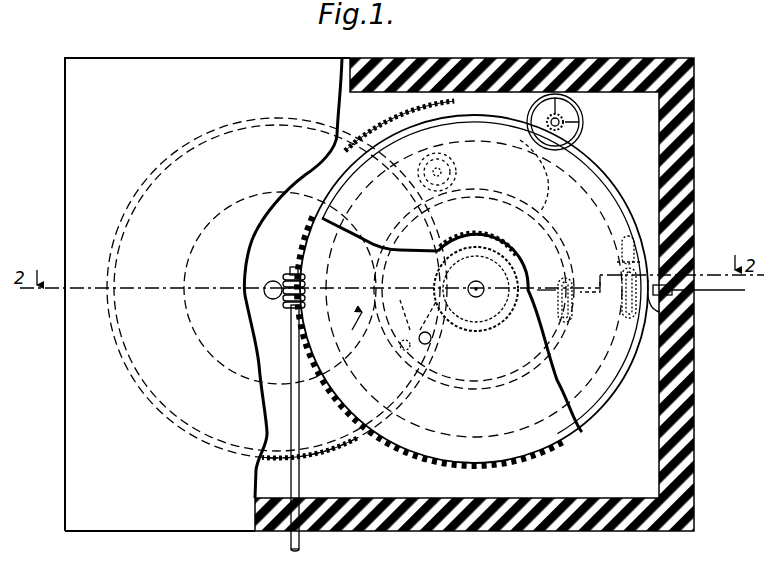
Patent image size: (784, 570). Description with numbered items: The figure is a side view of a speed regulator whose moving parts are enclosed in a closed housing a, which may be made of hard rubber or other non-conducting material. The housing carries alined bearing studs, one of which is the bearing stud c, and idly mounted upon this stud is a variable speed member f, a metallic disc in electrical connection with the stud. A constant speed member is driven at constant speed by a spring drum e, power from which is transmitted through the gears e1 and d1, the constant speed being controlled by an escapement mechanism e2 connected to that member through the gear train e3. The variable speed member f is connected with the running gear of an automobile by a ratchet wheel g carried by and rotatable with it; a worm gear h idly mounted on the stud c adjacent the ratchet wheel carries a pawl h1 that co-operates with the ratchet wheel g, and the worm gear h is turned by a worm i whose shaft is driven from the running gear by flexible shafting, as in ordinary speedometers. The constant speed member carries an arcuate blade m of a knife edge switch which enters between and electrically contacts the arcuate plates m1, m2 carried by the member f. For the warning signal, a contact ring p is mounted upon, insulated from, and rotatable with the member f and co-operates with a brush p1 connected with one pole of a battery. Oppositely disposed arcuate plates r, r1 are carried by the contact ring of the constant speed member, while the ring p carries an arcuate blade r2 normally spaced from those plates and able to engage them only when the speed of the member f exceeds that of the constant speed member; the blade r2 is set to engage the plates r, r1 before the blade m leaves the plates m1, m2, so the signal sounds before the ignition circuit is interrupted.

The closed housing a is at (82, 159).
The spring drum e is at (198, 345).
The gear e1 is at (352, 142).
The escapement mechanism e2 is at (565, 132).
The gear train e3 is at (462, 112).
The gear d1 is at (596, 184).
The ratchet wheel g is at (510, 258).
The bearing stud c is at (476, 297).
The worm gear h is at (536, 442).
The pawl h1 is at (412, 356).
The worm i is at (283, 280).
The arcuate blade m is at (600, 248).
The arcuate plate m1 is at (534, 323).
The arcuate plate m2 is at (572, 300).
The arcuate plate r is at (606, 330).
The arcuate plate r1 is at (636, 272).
The arcuate blade r2 is at (660, 246).
The contact ring p is at (646, 344).
The brush p1 is at (676, 298).
The variable speed member f is at (604, 396).